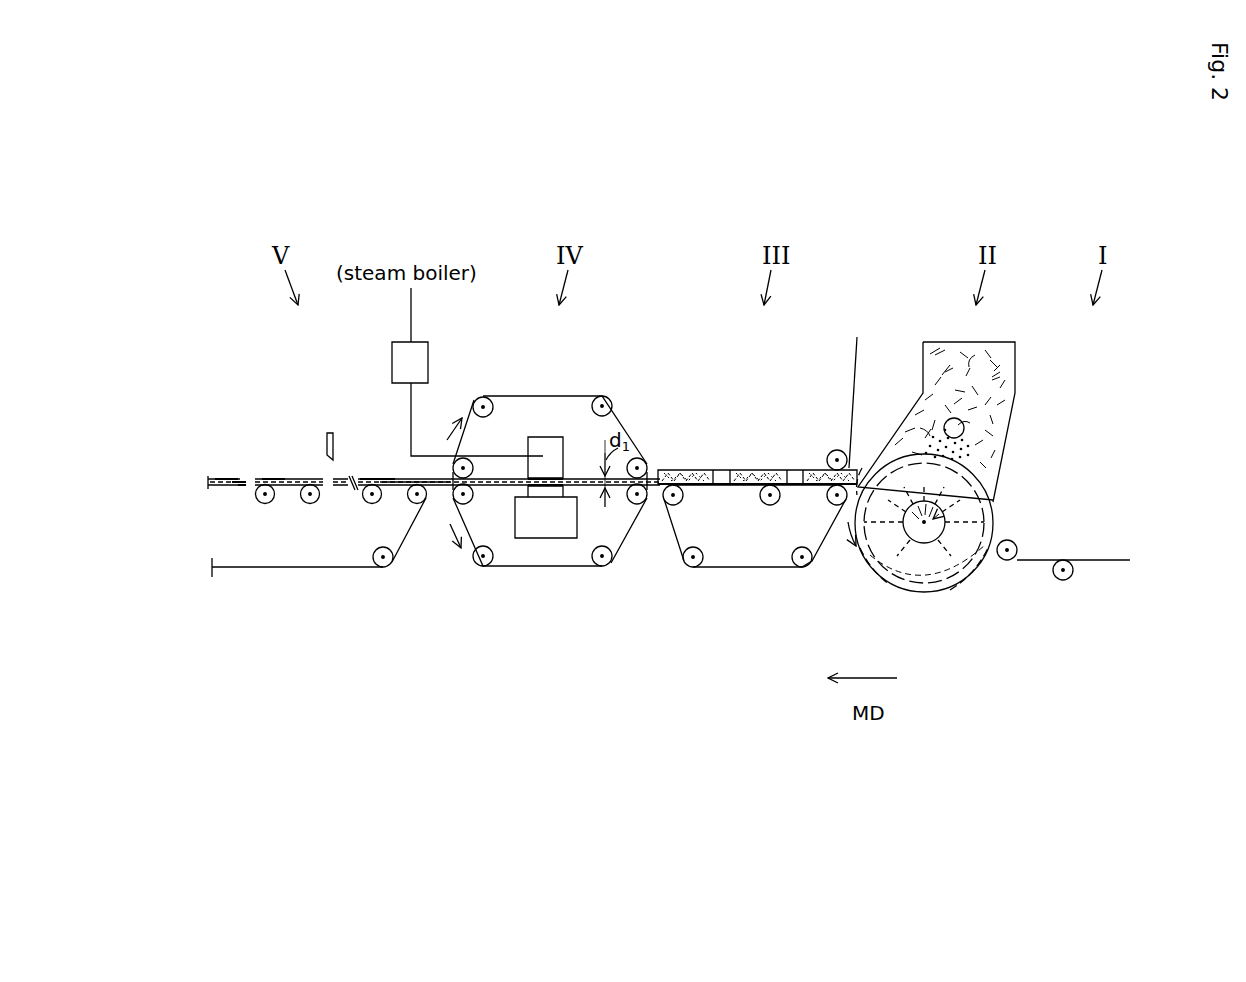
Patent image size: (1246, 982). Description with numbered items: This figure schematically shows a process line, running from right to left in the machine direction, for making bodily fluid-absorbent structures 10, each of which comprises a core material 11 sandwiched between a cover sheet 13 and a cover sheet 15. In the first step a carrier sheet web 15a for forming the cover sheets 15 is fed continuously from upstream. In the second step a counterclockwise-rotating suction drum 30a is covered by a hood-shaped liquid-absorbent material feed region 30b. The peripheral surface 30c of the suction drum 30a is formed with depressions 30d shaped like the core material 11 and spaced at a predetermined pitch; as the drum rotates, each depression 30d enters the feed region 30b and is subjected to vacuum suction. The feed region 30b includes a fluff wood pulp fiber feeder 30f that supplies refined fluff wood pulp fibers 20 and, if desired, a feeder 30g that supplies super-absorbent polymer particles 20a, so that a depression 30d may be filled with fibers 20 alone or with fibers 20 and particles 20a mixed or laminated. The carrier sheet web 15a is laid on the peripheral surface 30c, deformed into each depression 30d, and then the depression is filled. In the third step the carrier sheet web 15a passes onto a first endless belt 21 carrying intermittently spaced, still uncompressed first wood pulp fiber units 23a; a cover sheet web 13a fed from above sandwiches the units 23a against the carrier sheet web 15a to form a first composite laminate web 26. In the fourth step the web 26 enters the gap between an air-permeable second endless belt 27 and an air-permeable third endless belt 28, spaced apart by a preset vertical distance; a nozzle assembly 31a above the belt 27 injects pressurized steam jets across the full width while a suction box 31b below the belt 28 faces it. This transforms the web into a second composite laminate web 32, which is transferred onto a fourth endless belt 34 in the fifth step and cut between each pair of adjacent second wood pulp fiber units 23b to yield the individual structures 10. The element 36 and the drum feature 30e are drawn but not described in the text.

The bodily fluid-absorbent structure 10 is at (295, 476).
The core material 11 is at (226, 478).
The cover sheet 13 is at (239, 478).
The cover sheet 15 is at (243, 488).
The cutter 36 is at (325, 437).
The second composite laminate web 32 is at (372, 477).
The second wood pulp fiber unit 23b is at (397, 478).
The nozzle assembly 31a is at (545, 437).
The second endless belt 27 is at (576, 480).
The third endless belt 28 is at (578, 487).
The suction box 31b is at (530, 538).
The fourth endless belt 34 is at (336, 568).
The first endless belt 21 is at (775, 568).
The first composite laminate web 26 is at (700, 469).
The first wood pulp fiber unit 23a is at (814, 476).
The cover sheet web 13a is at (848, 408).
The fluff wood pulp fibers 20 is at (936, 398).
The fluff wood pulp fiber feeder 30f is at (997, 372).
The feeder for super-absorbent polymer particles 30g is at (961, 423).
The liquid-absorbent material feed region 30b is at (1007, 446).
The super-absorbent polymer particles 20a is at (968, 451).
The depression 30d is at (984, 512).
The suction drum shaft 30e is at (945, 517).
The peripheral surface 30c is at (900, 592).
The suction drum 30a is at (942, 595).
The carrier sheet web 15a is at (1110, 553).